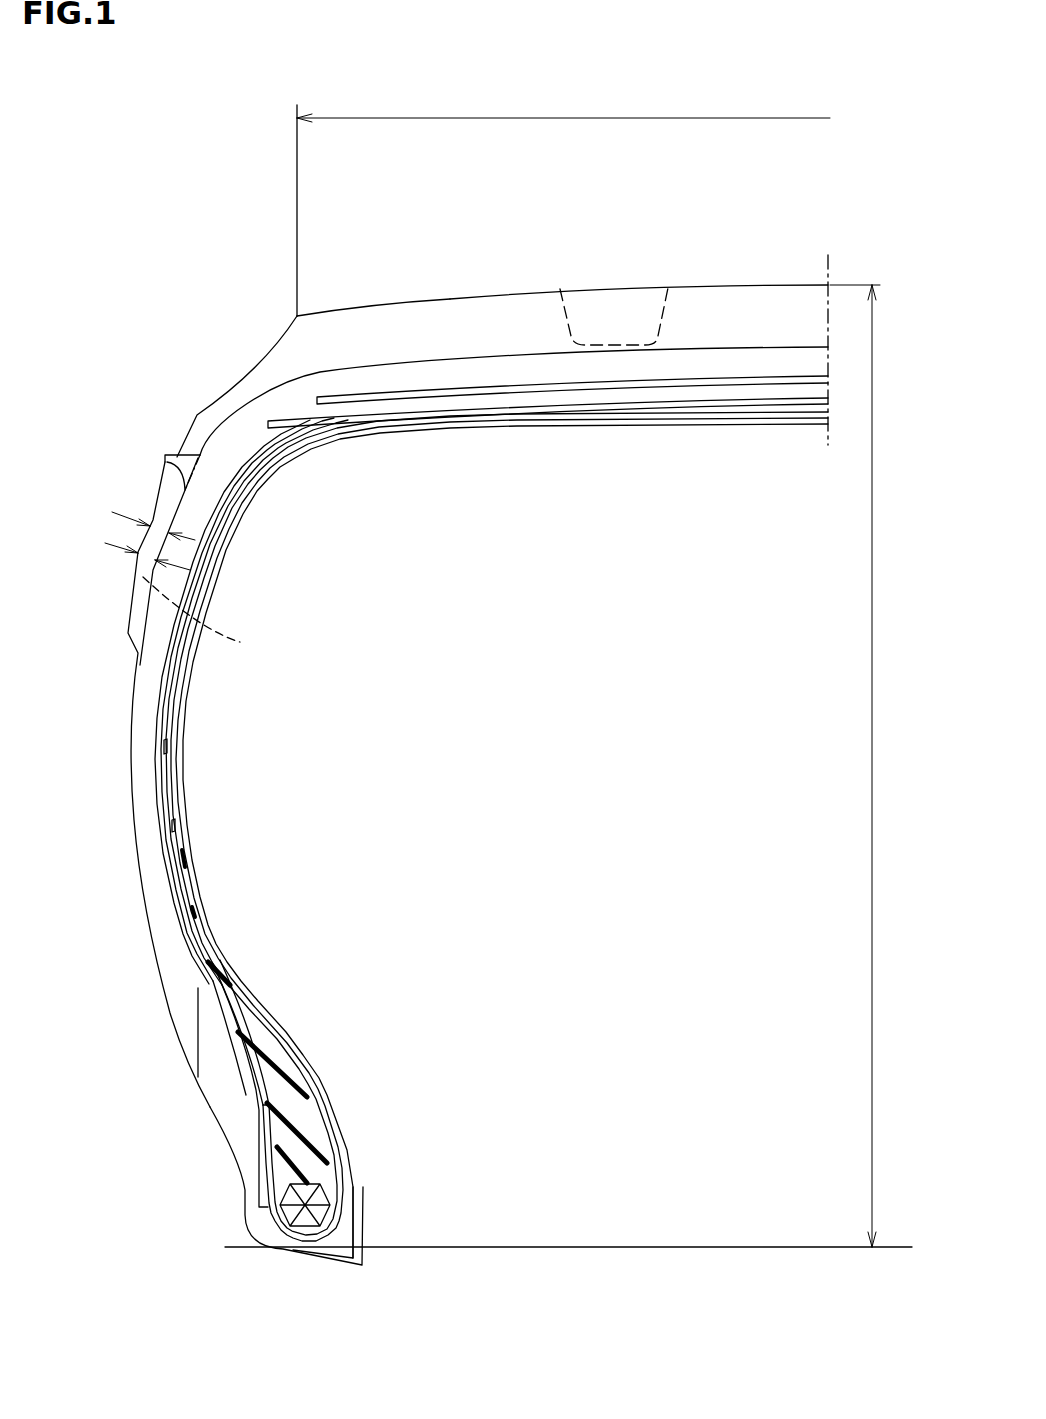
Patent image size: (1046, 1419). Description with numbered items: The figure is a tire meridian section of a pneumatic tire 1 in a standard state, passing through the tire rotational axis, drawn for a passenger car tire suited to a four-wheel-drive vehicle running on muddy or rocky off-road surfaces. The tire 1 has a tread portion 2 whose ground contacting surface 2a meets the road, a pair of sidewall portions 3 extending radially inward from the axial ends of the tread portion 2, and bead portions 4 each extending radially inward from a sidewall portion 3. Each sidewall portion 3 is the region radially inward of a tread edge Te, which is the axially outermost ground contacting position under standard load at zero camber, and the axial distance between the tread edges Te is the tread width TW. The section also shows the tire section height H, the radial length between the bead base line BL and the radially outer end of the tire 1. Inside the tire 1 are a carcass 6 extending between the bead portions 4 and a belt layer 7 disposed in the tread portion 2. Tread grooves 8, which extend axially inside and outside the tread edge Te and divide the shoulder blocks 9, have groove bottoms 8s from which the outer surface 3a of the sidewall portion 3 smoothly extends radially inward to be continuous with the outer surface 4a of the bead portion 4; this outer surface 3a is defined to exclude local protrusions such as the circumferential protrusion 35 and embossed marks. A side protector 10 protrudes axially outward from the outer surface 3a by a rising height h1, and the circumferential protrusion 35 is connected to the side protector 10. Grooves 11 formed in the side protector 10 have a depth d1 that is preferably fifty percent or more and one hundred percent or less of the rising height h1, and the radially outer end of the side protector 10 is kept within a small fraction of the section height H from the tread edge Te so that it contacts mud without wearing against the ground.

The pneumatic tire 1 is at (114, 215).
The tread portion 2 is at (424, 215).
The ground contacting surface 2a is at (532, 290).
The sidewall portion 3 is at (72, 743).
The outer surface of the sidewall portion 3a is at (133, 693).
The bead portion 4 is at (210, 1113).
The outer surface of the bead portion 4a is at (170, 1012).
The carcass 6 is at (192, 880).
The belt layer 7 is at (558, 384).
The tread groove 8 is at (363, 329).
The groove bottom 8s is at (482, 350).
The shoulder block 9 is at (393, 283).
The side protector 10 is at (140, 597).
The groove 11 is at (212, 618).
The circumferential protrusion 35 is at (167, 456).
The tread edge Te is at (297, 316).
The tread width TW is at (591, 118).
The tire equator C is at (829, 334).
The tire section height H is at (865, 766).
The bead base line BL is at (488, 1247).
The depth of the groove d1 is at (163, 513).
The rising height of the side protector h1 is at (150, 552).